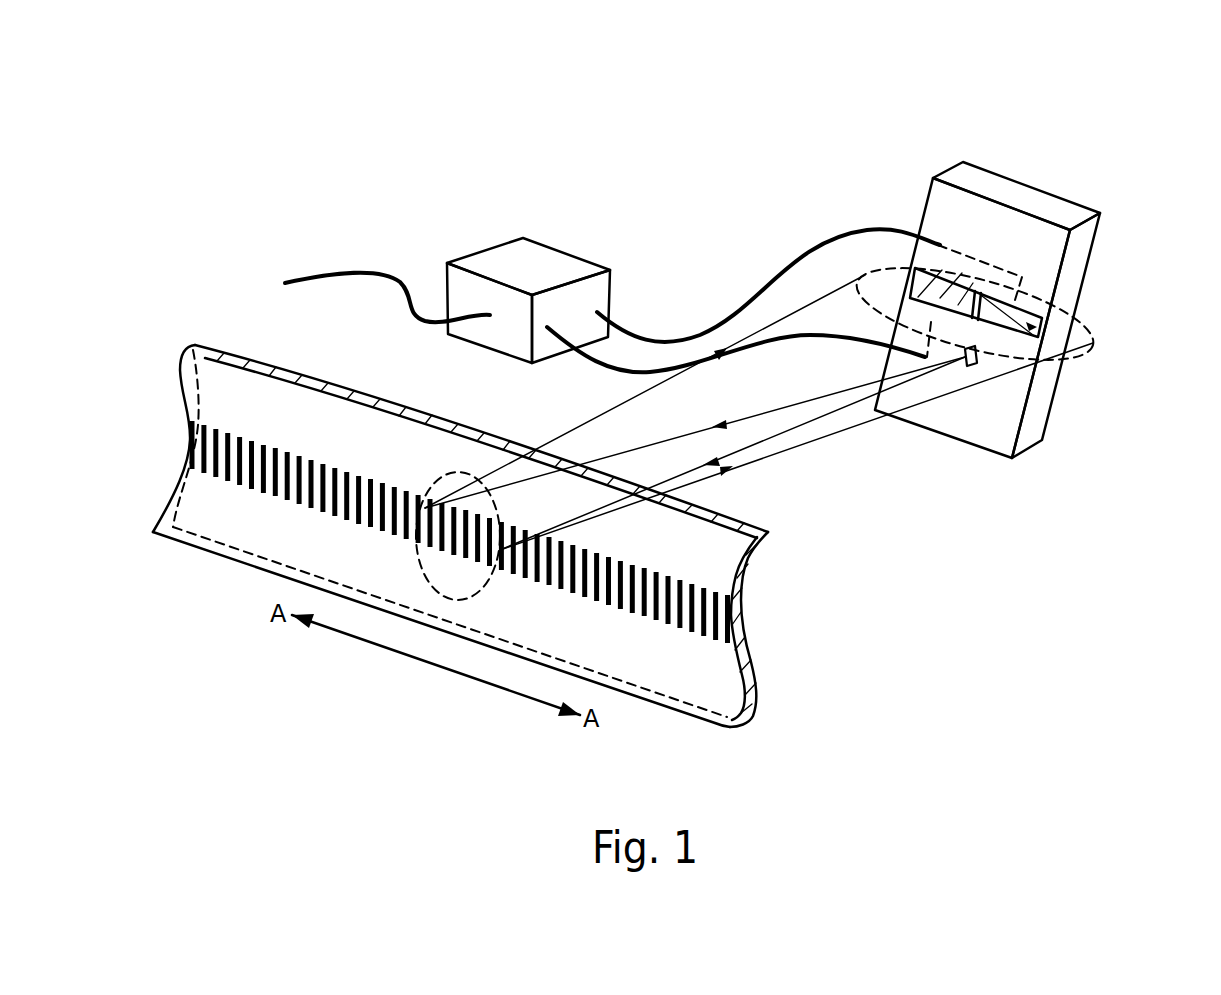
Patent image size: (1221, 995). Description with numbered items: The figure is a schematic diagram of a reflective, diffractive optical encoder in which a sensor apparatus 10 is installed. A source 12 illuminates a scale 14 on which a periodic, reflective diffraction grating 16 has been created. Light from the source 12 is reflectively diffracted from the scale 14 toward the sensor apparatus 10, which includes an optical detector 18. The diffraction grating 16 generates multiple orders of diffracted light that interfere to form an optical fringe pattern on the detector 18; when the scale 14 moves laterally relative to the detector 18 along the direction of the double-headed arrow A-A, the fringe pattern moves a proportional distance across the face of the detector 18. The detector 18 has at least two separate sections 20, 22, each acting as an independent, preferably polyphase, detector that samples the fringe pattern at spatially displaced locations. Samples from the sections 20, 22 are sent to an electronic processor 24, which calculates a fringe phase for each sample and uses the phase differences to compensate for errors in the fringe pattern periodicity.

The sensor apparatus 10 is at (806, 130).
The source 12 is at (983, 327).
The scale 14 is at (753, 672).
The diffraction grating 16 is at (712, 580).
The optical detector 18 is at (975, 357).
The section 20 is at (915, 268).
The section 22 is at (1047, 322).
The electronic processor 24 is at (555, 260).